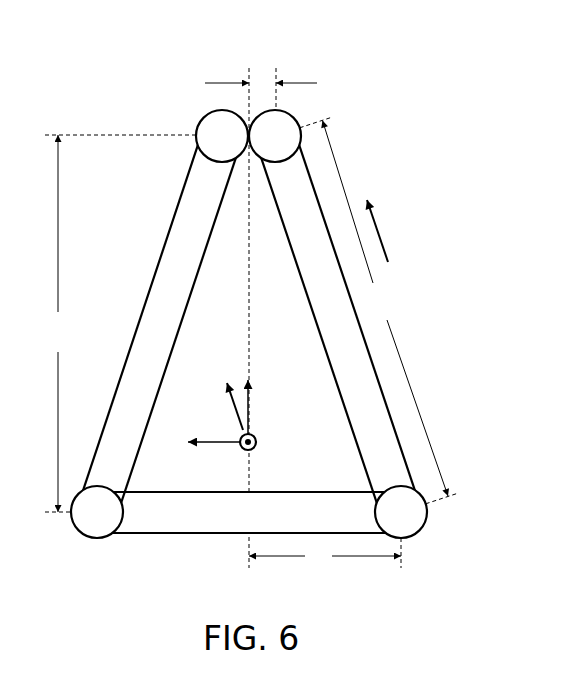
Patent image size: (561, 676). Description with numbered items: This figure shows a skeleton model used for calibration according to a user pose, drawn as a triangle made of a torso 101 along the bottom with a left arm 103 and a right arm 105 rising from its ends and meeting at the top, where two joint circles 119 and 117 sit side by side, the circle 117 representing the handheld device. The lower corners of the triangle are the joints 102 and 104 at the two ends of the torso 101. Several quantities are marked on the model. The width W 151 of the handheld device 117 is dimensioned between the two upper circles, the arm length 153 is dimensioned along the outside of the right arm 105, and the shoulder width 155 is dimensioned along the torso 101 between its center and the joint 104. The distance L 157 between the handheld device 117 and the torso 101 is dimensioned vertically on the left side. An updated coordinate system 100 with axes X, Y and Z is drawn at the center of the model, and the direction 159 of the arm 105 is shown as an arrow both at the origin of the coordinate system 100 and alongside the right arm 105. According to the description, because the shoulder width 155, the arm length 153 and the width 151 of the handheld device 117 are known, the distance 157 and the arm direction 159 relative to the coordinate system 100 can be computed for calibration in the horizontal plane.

The updated coordinate system 100 is at (253, 411).
The torso 101 is at (249, 512).
The left torso joint 102 is at (97, 512).
The left arm 103 is at (159, 324).
The right torso joint 104 is at (401, 512).
The arm 105 is at (338, 324).
The handheld device 117 is at (275, 136).
The left arm end joint 119 is at (222, 136).
The width W of the handheld device 151 is at (299, 80).
The arm length 153 is at (337, 163).
The shoulder width 155 is at (358, 558).
The distance L 157 is at (60, 205).
The direction of the arm 159 is at (233, 417).